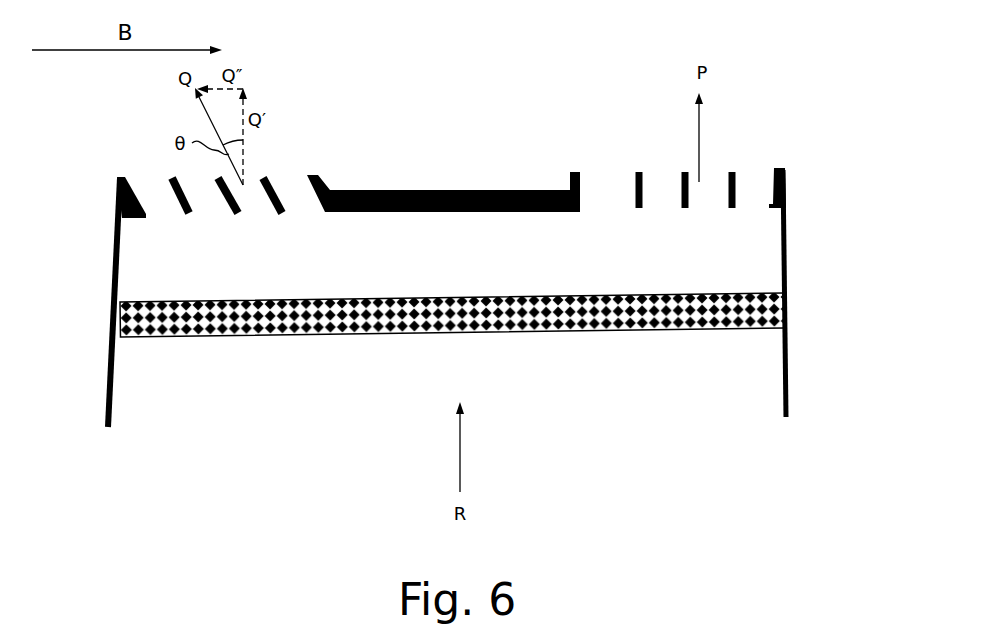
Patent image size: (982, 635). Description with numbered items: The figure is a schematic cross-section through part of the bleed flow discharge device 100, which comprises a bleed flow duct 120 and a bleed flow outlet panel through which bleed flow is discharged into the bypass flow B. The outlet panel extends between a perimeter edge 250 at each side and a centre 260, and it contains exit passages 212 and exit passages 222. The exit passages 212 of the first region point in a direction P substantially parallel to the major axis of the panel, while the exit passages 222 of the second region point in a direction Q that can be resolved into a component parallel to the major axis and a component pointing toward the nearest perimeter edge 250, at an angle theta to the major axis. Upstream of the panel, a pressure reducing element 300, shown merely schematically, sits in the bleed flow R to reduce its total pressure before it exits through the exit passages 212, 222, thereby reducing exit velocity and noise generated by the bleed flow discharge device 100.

The bleed flow discharge device 100 is at (608, 90).
The bleed flow duct 120 is at (108, 393).
The exit passages 212 is at (755, 182).
The exit passages 222 is at (290, 185).
The perimeter edge 250 is at (115, 205).
The centre 260 is at (475, 190).
The pressure reducing element 300 is at (785, 312).